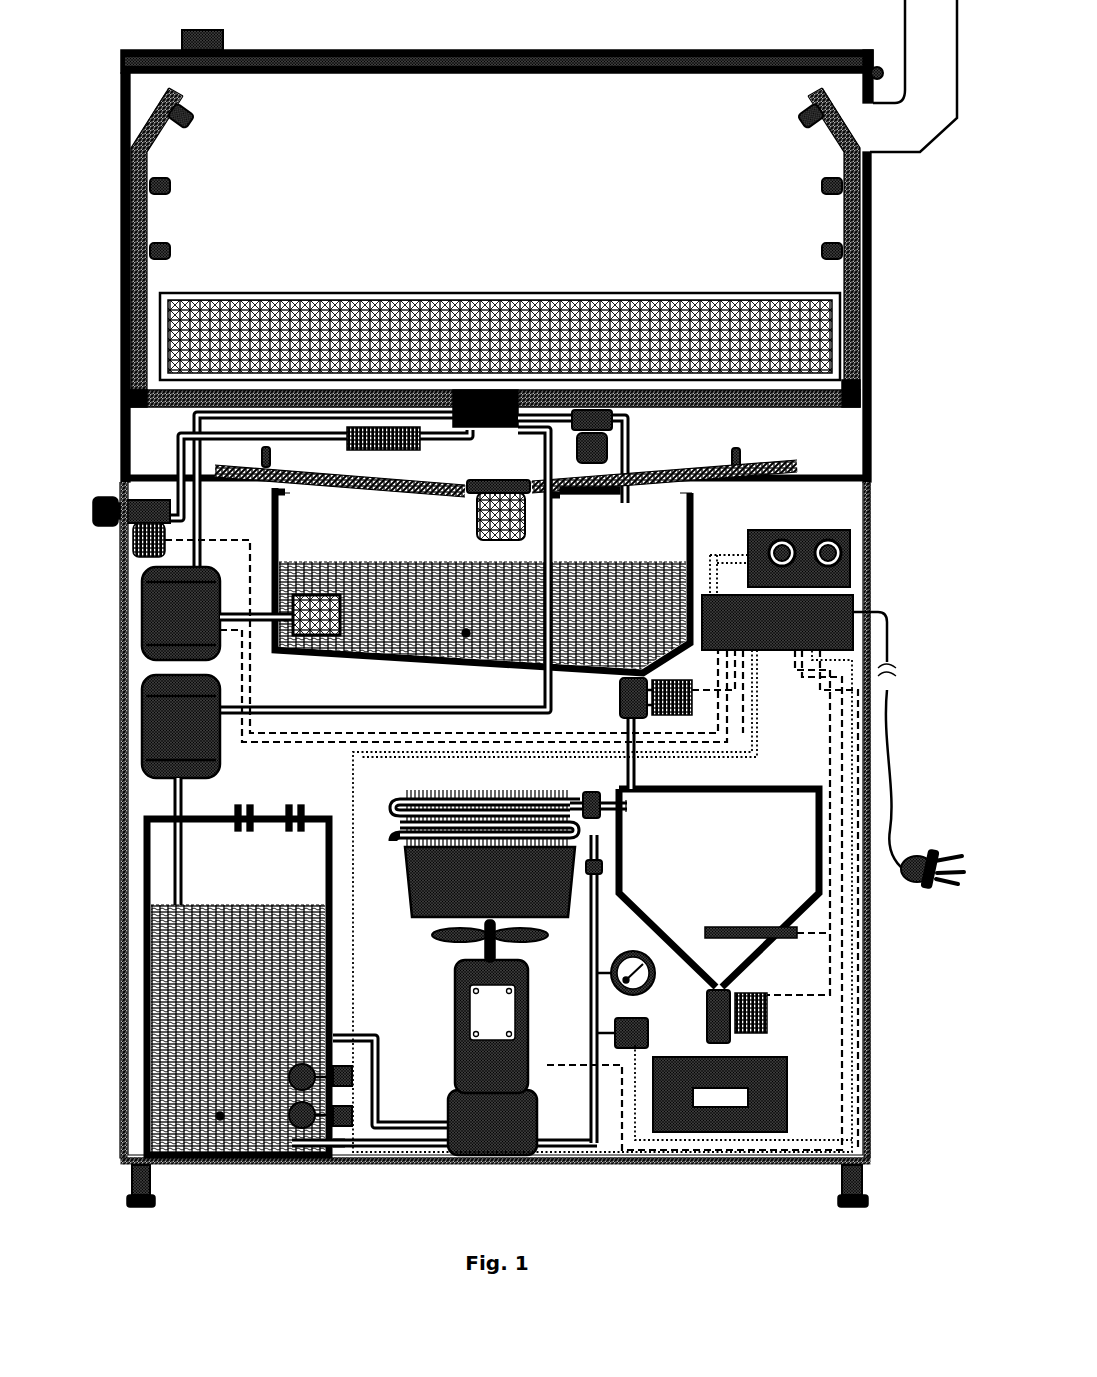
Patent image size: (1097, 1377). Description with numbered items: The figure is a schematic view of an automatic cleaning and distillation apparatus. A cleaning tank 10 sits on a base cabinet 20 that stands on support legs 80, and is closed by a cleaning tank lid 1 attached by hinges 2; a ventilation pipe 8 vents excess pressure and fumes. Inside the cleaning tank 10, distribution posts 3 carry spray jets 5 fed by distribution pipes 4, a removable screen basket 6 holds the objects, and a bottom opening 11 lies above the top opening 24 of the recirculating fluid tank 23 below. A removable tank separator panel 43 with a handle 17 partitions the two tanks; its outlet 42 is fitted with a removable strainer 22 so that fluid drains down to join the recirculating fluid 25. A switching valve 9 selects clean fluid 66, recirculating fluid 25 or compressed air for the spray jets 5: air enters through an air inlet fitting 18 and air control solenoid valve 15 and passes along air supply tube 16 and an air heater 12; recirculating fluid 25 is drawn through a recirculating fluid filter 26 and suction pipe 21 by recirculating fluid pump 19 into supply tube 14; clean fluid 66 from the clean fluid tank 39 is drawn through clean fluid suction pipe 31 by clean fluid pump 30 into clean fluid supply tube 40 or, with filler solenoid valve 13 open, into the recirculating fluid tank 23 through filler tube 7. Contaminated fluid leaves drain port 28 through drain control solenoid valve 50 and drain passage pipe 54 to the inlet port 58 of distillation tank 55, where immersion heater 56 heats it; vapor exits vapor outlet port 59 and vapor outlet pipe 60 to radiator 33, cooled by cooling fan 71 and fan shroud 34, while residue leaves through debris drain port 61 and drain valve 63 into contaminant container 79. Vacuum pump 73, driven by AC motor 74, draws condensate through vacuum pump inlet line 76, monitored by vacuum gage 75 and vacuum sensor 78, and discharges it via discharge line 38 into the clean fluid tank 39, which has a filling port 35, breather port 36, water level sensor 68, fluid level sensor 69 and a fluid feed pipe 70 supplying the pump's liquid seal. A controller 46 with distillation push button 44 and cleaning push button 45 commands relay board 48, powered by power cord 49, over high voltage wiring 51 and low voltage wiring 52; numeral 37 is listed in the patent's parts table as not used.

The cleaning tank lid 1 is at (390, 51).
The hinges 2 is at (874, 64).
The distribution posts 3 is at (148, 230).
The distribution pipes 4 is at (848, 400).
The spray jets 5 is at (194, 128).
The removable screen basket 6 is at (332, 293).
The filler tube 7 is at (627, 424).
The ventilation pipe 8 is at (939, 149).
The switching valve 9 is at (505, 426).
The cleaning tank 10 is at (118, 214).
The bottom opening 11 is at (293, 495).
The air heater 12 is at (382, 450).
The filler solenoid valve 13 is at (586, 465).
The recirculating fluid supply tube 14 is at (204, 490).
The air control solenoid valve 15 is at (134, 558).
The air supply tube 16 is at (178, 438).
The handle 17 is at (272, 456).
The air inlet fitting 18 is at (96, 502).
The recirculating fluid pump 19 is at (142, 628).
The base cabinet 20 is at (119, 692).
The recirculating fluid suction pipe 21 is at (264, 630).
The removable strainer 22 is at (476, 522).
The recirculating fluid tank 23 is at (482, 594).
The top opening 24 is at (285, 498).
The recirculating fluid 25 is at (470, 638).
The recirculating fluid filter 26 is at (306, 640).
The drain port 28 is at (624, 664).
The clean fluid pump 30 is at (225, 751).
The clean fluid suction pipe 31 is at (188, 789).
The radiator 33 is at (436, 792).
The fan shroud 34 is at (558, 916).
The filling port 35 is at (244, 832).
The breather port 36 is at (291, 828).
The liquid 37 is at (301, 1024).
The discharge line 38 is at (374, 1038).
The clean fluid tank 39 is at (189, 1013).
The clean fluid supply tube 40 is at (336, 708).
The outlet 42 is at (496, 480).
The removable tank separator panel 43 is at (710, 476).
The distillation push button 44 is at (782, 539).
The cleaning push button 45 is at (835, 529).
The controller 46 is at (829, 541).
The relay board 48 is at (774, 658).
The power cord 49 is at (886, 628).
The drain control solenoid valve 50 is at (620, 696).
The high voltage wiring 51 is at (730, 1193).
The low voltage wiring 52 is at (730, 1214).
The drain passage pipe 54 is at (638, 772).
The distillation tank 55 is at (786, 790).
The immersion heater 56 is at (744, 926).
The inlet port 58 is at (630, 806).
The vapor outlet port 59 is at (632, 814).
The vapor outlet pipe 60 is at (584, 793).
The debris drain port 61 is at (748, 928).
The drain valve 63 is at (767, 1012).
The clean fluid 66 is at (218, 1121).
The water level sensor 68 is at (282, 1148).
The fluid level sensor 69 is at (288, 1066).
The fluid feed pipe 70 is at (392, 1150).
The cooling fan 71 is at (446, 942).
The vacuum pump 73 is at (455, 1057).
The AC motor 74 is at (455, 1044).
The vacuum gage 75 is at (648, 985).
The vacuum pump inlet line 76 is at (554, 1138).
The vacuum sensor 78 is at (650, 1033).
The contaminant container 79 is at (786, 1086).
The support legs 80 is at (840, 1188).